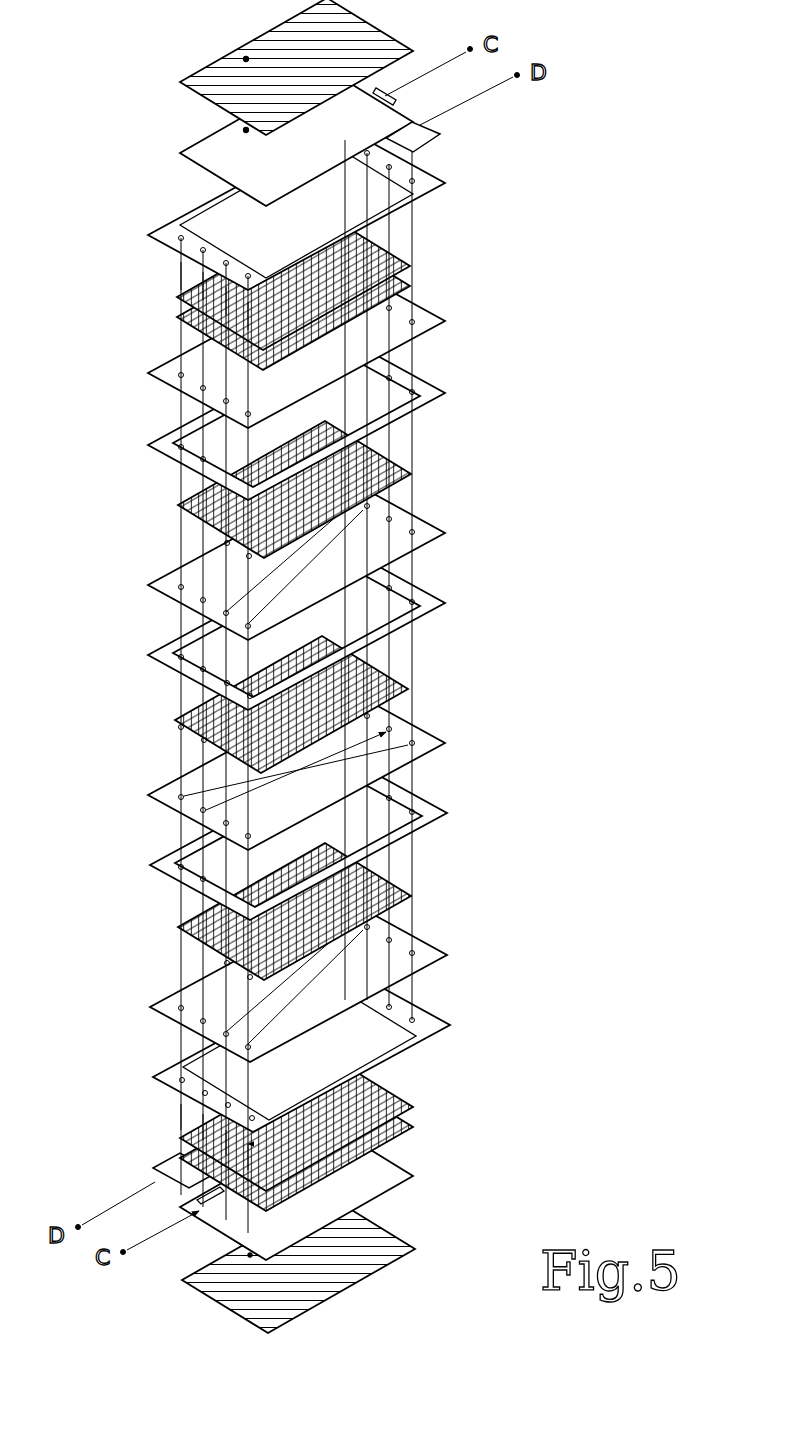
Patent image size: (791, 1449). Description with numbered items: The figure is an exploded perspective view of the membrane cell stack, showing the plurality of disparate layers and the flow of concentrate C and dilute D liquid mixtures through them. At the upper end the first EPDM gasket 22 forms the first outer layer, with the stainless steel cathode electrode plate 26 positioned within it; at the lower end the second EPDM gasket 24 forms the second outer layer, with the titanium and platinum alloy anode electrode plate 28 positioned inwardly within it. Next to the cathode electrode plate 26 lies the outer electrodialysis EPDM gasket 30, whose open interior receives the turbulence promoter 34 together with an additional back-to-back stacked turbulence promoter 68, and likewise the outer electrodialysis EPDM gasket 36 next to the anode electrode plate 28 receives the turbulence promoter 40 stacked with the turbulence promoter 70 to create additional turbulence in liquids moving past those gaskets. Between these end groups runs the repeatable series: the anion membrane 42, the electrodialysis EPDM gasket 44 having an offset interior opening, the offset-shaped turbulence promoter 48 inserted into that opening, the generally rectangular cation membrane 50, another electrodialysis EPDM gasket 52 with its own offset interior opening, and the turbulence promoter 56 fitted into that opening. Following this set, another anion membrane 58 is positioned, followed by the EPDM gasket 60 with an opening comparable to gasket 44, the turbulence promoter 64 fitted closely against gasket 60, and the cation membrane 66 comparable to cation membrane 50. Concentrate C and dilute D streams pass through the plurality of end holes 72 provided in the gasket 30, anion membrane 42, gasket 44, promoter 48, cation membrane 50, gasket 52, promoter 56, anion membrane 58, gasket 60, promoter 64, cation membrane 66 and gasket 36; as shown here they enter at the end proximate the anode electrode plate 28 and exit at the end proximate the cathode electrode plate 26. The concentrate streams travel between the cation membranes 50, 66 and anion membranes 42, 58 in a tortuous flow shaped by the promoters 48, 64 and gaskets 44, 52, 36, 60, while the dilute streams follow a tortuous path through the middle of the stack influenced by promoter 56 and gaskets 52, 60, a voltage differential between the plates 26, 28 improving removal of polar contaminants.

The first EPDM gasket 22 is at (335, 25).
The second EPDM gasket 24 is at (333, 1242).
The cathode electrode plate 26 is at (215, 144).
The anode electrode plate 28 is at (333, 1174).
The outer electrodialysis EPDM gasket 30 is at (343, 176).
The turbulence promoter 34 is at (328, 252).
The outer electrodialysis EPDM gasket 36 is at (338, 1022).
The turbulence promoter 40 is at (328, 1098).
The anion membrane 42 is at (328, 332).
The electrodialysis EPDM gasket 44 is at (343, 394).
The turbulence promoter 48 is at (328, 470).
The cation membrane 50 is at (333, 543).
The electrodialysis EPDM gasket 52 is at (343, 603).
The turbulence promoter 56 is at (328, 680).
The anion membrane 58 is at (333, 752).
The EPDM gasket 60 is at (343, 814).
The turbulence promoter 64 is at (328, 890).
The cation membrane 66 is at (333, 962).
The turbulence promoter 68 is at (328, 285).
The turbulence promoter 70 is at (328, 1130).
The end holes 72 is at (407, 1013).